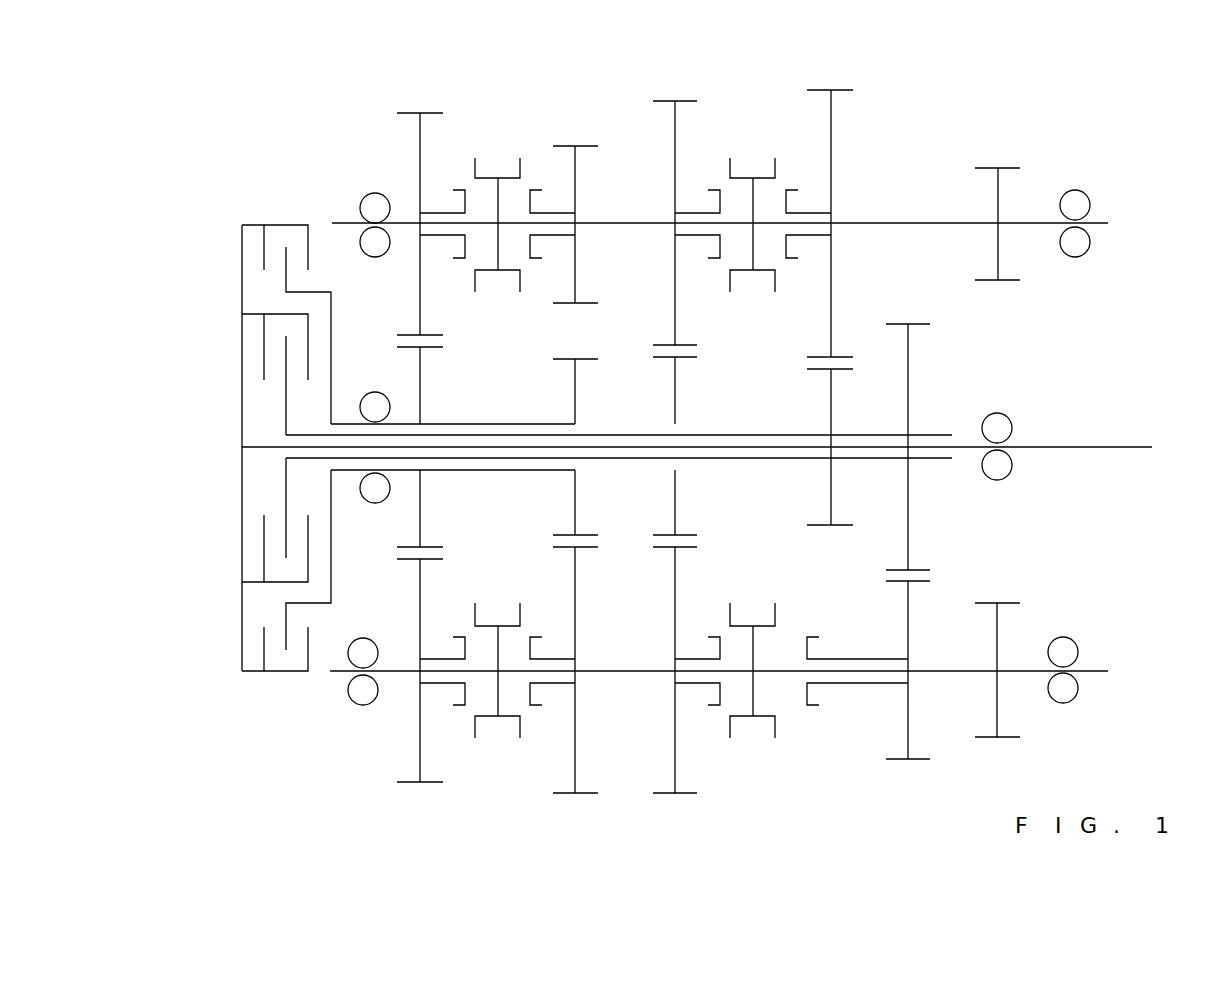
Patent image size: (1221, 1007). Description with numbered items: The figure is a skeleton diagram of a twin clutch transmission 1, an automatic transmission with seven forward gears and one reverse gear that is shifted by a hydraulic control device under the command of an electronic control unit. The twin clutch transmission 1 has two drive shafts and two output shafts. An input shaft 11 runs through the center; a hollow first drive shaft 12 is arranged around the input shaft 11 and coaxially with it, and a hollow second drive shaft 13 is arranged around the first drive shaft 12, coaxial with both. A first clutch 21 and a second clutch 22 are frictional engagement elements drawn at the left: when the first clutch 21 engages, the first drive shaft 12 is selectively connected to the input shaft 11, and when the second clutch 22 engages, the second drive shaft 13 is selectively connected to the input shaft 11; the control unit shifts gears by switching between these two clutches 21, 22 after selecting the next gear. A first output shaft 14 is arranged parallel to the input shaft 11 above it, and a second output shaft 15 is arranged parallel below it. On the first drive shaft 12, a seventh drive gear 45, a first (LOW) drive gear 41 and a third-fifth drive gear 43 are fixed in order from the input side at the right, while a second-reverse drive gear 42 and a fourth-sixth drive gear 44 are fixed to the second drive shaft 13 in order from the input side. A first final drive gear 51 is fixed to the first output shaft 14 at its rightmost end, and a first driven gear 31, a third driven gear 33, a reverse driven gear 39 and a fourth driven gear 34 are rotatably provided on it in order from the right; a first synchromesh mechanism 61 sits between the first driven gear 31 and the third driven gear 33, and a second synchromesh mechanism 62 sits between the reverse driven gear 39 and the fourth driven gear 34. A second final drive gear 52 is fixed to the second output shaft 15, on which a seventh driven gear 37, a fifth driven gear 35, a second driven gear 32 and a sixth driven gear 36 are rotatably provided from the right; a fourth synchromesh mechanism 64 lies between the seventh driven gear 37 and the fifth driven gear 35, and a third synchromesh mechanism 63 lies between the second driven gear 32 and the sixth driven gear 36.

The twin clutch transmission 1 is at (1127, 104).
The input shaft 11 is at (1040, 447).
The first drive shaft 12 is at (928, 435).
The second drive shaft 13 is at (500, 424).
The first output shaft 14 is at (885, 223).
The second output shaft 15 is at (928, 670).
The first clutch 21 is at (220, 344).
The second clutch 22 is at (220, 249).
The first driven gear 31 is at (843, 90).
The second driven gear 32 is at (585, 793).
The third driven gear 33 is at (690, 101).
The fourth driven gear 34 is at (430, 113).
The fifth driven gear 35 is at (685, 793).
The sixth driven gear 36 is at (430, 782).
The seventh driven gear 37 is at (920, 759).
The reverse driven gear 39 is at (585, 146).
The first (LOW) drive gear 41 is at (820, 525).
The second-reverse drive gear 42 is at (585, 359).
The third-fifth drive gear 43 is at (685, 357).
The fourth-sixth drive gear 44 is at (428, 347).
The seventh drive gear 45 is at (917, 324).
The first final drive gear 51 is at (1007, 168).
The second final drive gear 52 is at (1005, 603).
The first synchromesh mechanism 61 is at (761, 142).
The second synchromesh mechanism 62 is at (508, 141).
The third synchromesh mechanism 63 is at (508, 587).
The fourth synchromesh mechanism 64 is at (783, 757).